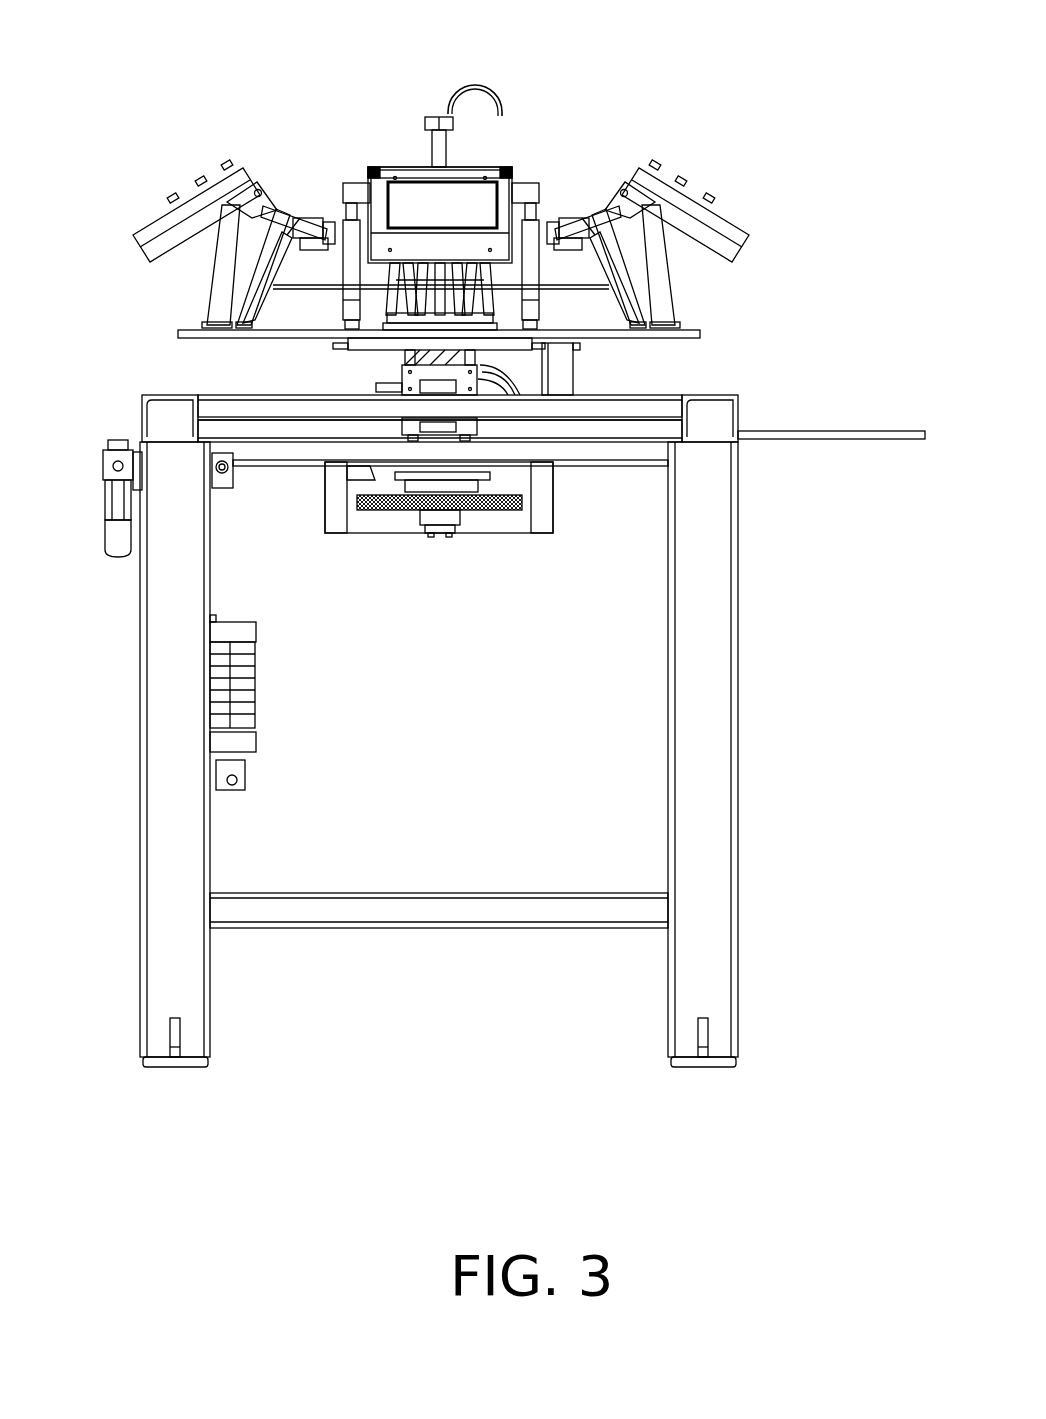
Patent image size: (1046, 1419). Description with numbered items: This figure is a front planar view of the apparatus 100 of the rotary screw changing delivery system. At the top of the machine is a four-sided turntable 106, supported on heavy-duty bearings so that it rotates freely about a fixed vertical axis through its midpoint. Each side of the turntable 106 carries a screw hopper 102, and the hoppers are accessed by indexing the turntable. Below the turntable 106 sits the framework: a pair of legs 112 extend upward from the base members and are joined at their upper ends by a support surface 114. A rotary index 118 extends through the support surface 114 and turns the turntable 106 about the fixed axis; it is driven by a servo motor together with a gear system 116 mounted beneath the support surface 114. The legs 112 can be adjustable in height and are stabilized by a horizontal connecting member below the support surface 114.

The apparatus 100 is at (268, 68).
The screw hopper 102 is at (720, 230).
The turntable 106 is at (210, 340).
The leg 112 is at (708, 601).
The support surface 114 is at (592, 450).
The gear system 116 is at (443, 515).
The rotary index 118 is at (413, 373).